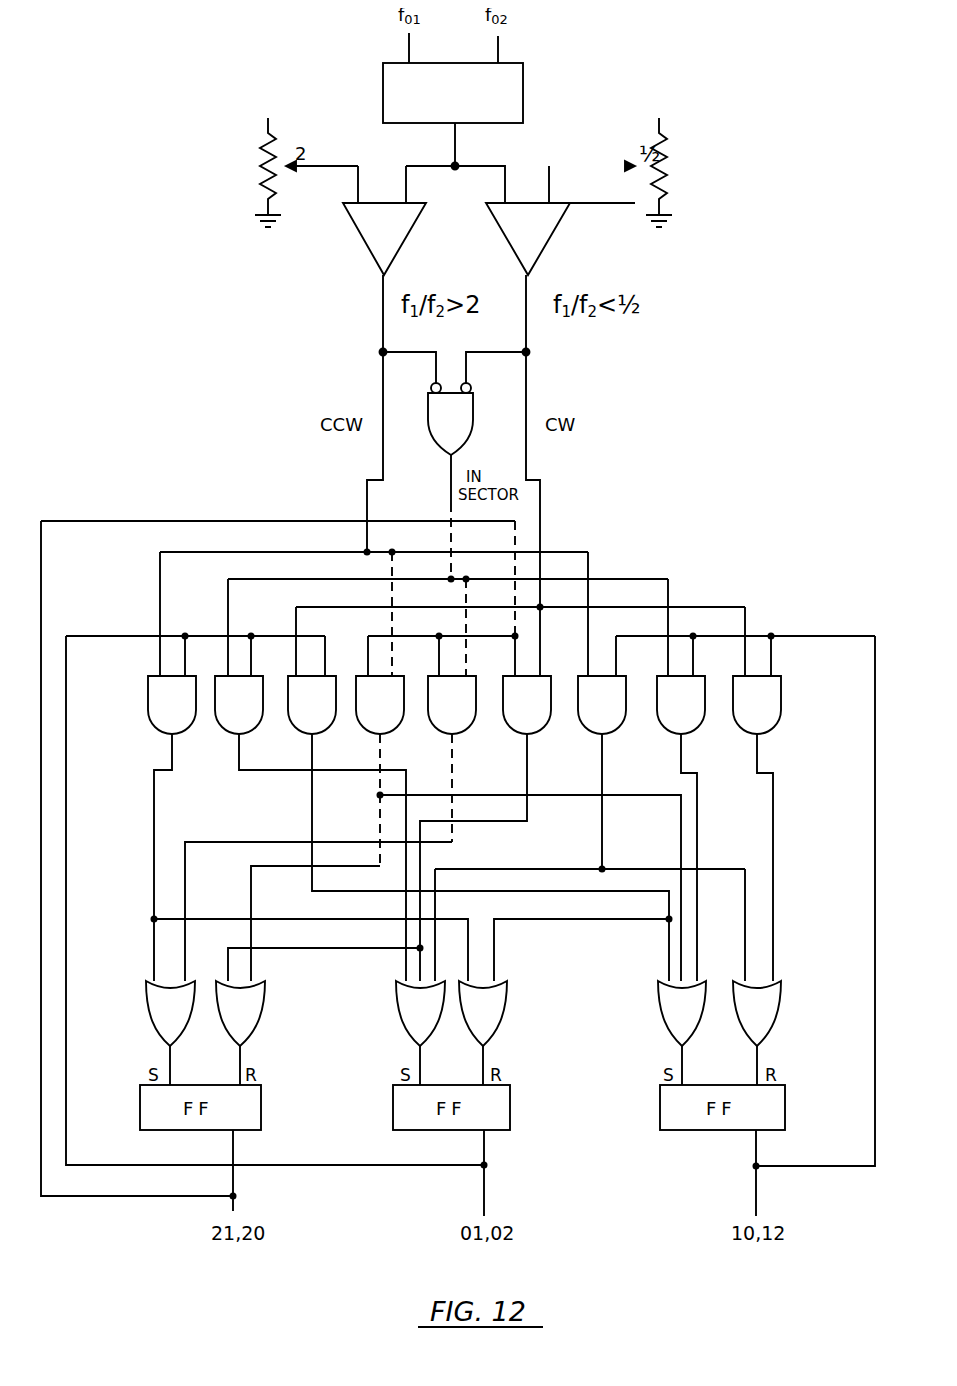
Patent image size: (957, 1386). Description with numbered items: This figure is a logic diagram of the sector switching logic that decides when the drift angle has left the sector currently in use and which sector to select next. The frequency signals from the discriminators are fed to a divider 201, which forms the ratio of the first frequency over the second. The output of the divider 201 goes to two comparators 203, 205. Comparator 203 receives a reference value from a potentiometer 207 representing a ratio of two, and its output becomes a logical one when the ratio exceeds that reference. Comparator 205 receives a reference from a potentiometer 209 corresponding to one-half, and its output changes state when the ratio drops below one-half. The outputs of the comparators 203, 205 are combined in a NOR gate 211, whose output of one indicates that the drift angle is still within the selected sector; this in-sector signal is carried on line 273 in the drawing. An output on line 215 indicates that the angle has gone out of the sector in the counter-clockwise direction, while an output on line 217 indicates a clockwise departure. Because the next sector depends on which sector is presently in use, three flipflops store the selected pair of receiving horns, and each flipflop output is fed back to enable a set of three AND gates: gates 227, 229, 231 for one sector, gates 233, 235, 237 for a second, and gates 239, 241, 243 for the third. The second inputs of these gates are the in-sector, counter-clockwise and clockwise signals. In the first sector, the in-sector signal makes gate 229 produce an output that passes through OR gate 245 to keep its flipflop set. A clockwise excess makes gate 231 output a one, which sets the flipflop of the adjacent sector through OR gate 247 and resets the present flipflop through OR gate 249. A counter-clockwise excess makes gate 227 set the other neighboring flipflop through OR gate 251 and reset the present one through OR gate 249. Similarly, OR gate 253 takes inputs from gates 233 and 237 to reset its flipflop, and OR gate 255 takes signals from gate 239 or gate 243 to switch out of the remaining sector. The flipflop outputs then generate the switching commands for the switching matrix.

The divider 201 is at (523, 92).
The comparator 203 is at (350, 242).
The comparator 205 is at (562, 242).
The potentiometer 207 is at (255, 172).
The potentiometer 209 is at (660, 172).
The NOR gate 211 is at (470, 412).
The line 215 is at (362, 494).
The line 217 is at (540, 494).
The in-sector signal line 273 is at (447, 486).
The AND gate 227 is at (178, 716).
The AND gate 229 is at (245, 716).
The AND gate 231 is at (318, 716).
The AND gate 233 is at (386, 716).
The AND gate 235 is at (458, 716).
The AND gate 237 is at (533, 716).
The AND gate 239 is at (608, 716).
The AND gate 241 is at (687, 716).
The AND gate 243 is at (765, 716).
The OR gate 245 is at (400, 1024).
The OR gate 247 is at (657, 1012).
The OR gate 249 is at (501, 998).
The OR gate 251 is at (153, 1022).
The OR gate 253 is at (258, 996).
The OR gate 255 is at (775, 1006).